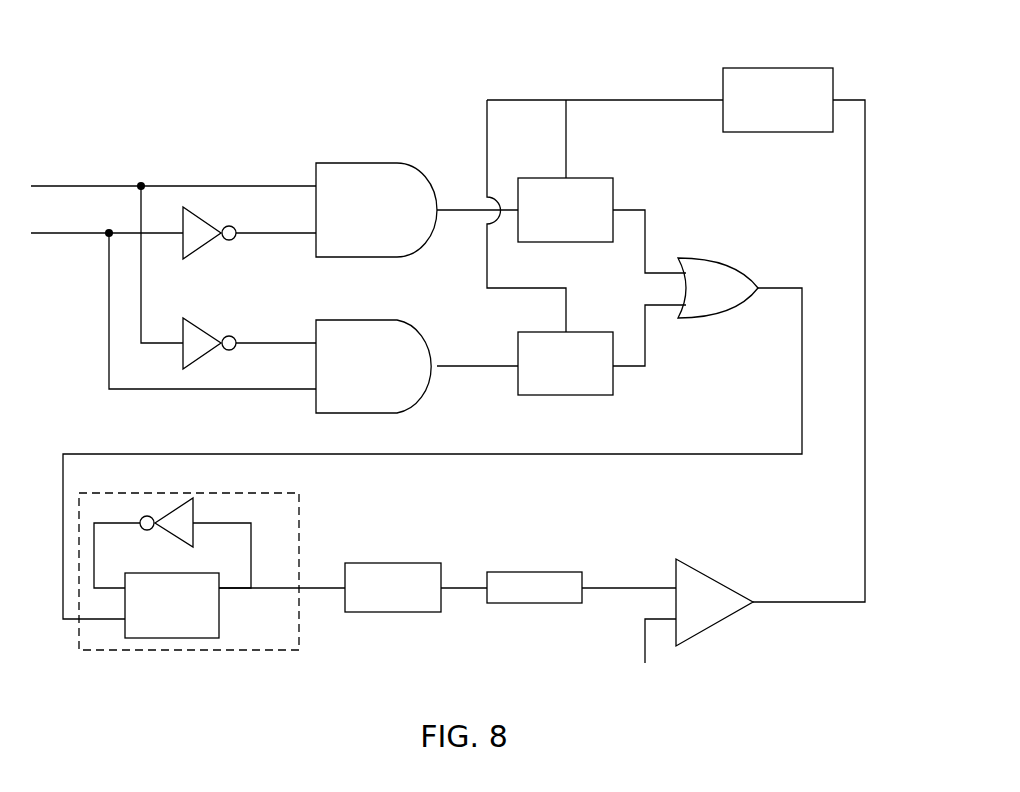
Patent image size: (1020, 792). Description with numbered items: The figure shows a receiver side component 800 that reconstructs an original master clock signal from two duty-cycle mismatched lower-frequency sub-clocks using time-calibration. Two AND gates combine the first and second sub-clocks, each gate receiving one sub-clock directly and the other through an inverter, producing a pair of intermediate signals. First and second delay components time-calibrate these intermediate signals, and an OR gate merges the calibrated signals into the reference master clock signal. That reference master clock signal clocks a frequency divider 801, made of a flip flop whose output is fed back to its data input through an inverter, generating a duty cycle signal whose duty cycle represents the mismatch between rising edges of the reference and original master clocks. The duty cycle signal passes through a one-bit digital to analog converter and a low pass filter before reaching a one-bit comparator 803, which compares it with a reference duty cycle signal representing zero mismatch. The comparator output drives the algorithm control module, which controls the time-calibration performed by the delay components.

The receiver side component 800 is at (120, 77).
The frequency divider 801 is at (79, 650).
The 1-bit comparator 803 is at (715, 580).